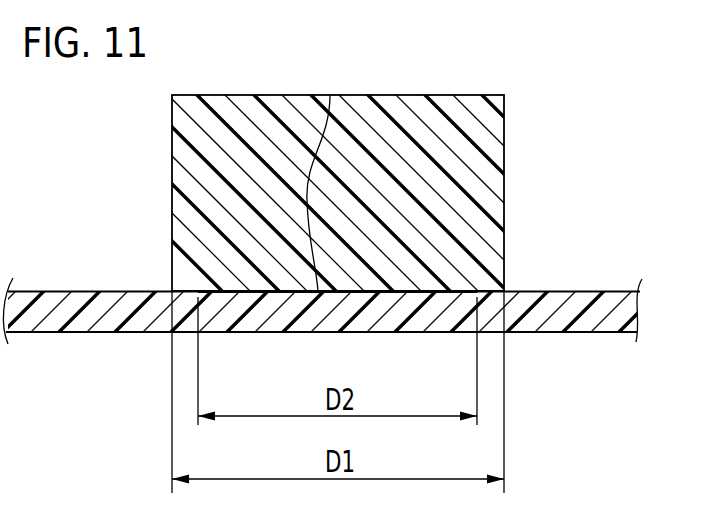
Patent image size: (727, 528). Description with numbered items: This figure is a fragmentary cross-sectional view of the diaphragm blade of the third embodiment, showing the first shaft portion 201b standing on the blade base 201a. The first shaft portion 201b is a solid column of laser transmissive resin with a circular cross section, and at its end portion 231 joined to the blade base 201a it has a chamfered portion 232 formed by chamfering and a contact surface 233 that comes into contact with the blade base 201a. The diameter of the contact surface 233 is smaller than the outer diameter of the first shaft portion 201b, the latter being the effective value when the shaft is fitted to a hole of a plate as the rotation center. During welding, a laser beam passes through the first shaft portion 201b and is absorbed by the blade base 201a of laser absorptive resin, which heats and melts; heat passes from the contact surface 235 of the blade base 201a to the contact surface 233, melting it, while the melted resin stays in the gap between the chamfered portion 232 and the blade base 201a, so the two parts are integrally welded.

The blade base 201a is at (588, 326).
The first shaft portion 201b is at (354, 195).
The end portion 231 is at (487, 223).
The chamfered portion 232 is at (486, 288).
The contact surface 233 is at (403, 292).
The contact surface 235 is at (330, 95).